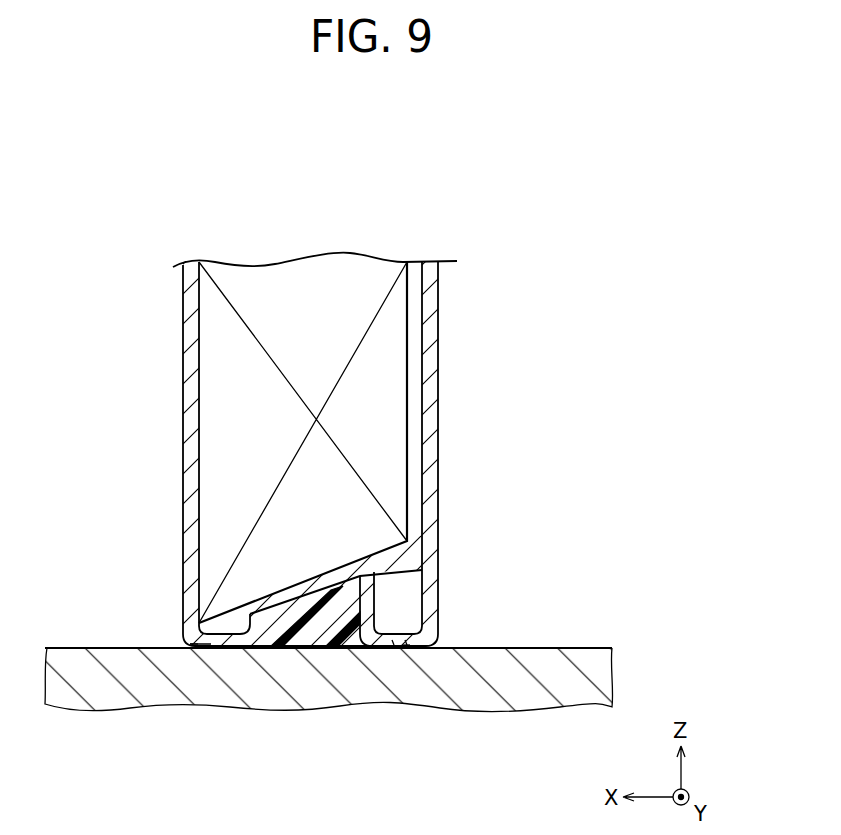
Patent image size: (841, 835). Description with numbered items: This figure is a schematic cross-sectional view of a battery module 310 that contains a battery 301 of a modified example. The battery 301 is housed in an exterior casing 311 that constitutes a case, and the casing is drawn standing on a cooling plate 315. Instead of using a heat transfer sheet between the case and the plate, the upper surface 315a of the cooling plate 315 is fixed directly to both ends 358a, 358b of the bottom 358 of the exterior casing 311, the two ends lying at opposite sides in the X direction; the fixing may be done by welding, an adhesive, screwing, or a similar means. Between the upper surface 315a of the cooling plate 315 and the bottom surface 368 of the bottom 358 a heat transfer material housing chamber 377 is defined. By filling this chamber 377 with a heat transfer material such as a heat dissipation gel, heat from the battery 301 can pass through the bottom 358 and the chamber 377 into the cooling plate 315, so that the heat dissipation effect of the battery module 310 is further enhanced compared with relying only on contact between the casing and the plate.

The battery 301 is at (315, 238).
The battery module 310 is at (374, 206).
The exterior casing 311 is at (438, 366).
The cooling plate 315 is at (230, 682).
The upper surface of cooling plate 315a is at (492, 648).
The bottom 358 is at (391, 645).
The first end of bottom 358a is at (185, 646).
The second end of bottom 358b is at (407, 648).
The bottom surface 368 is at (277, 612).
The heat transfer material housing chamber 377 is at (318, 596).